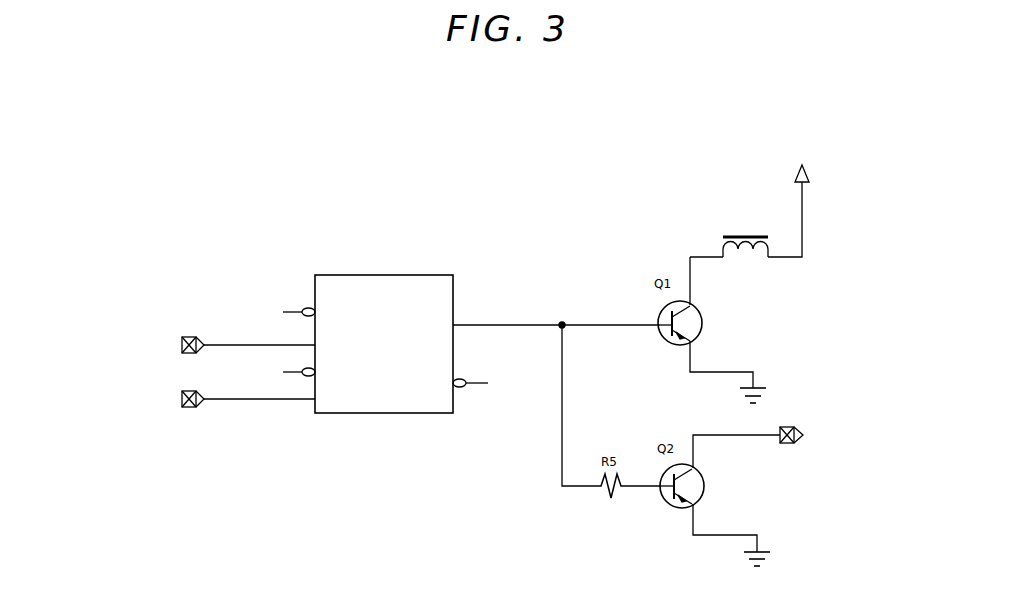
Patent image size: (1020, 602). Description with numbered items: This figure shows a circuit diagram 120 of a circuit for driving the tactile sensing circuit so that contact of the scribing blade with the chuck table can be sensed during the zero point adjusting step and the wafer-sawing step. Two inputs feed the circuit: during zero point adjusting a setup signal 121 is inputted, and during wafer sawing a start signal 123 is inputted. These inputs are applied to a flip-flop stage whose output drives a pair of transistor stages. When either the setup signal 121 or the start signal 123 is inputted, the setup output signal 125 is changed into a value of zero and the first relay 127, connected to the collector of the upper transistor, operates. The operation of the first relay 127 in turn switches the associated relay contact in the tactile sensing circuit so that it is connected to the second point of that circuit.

The circuit diagram 120 is at (284, 232).
The setup signal 121 is at (199, 446).
The start signal 123 is at (182, 300).
The setup output signal 125 is at (870, 450).
The relay 1 127 is at (746, 200).